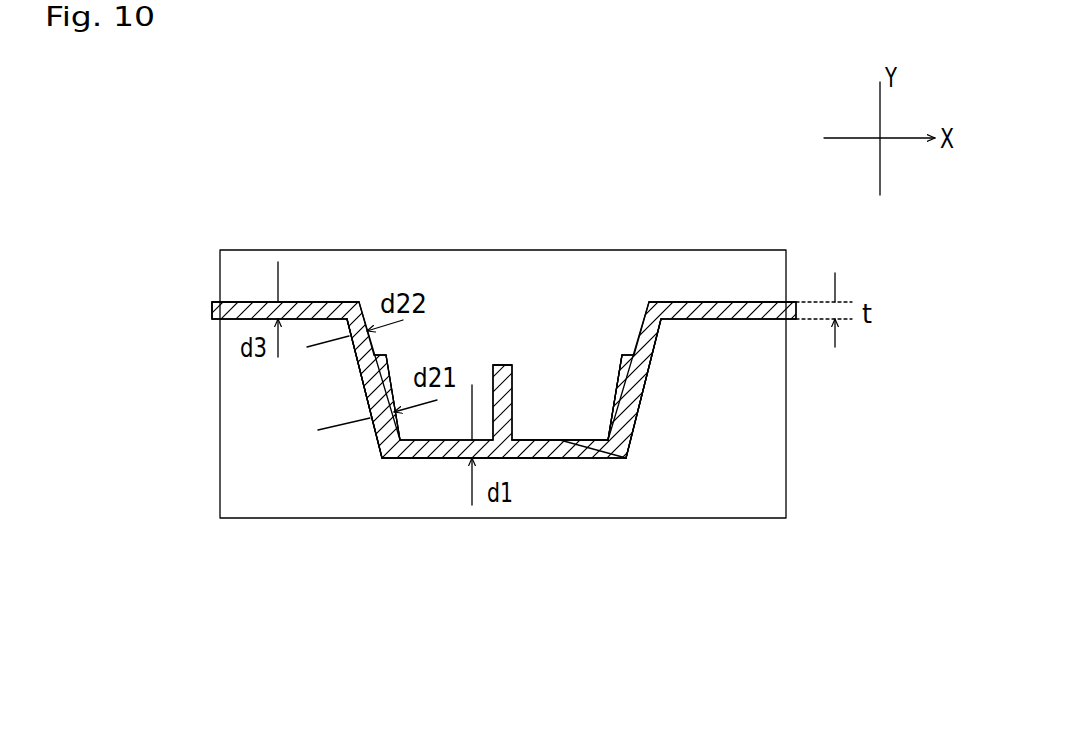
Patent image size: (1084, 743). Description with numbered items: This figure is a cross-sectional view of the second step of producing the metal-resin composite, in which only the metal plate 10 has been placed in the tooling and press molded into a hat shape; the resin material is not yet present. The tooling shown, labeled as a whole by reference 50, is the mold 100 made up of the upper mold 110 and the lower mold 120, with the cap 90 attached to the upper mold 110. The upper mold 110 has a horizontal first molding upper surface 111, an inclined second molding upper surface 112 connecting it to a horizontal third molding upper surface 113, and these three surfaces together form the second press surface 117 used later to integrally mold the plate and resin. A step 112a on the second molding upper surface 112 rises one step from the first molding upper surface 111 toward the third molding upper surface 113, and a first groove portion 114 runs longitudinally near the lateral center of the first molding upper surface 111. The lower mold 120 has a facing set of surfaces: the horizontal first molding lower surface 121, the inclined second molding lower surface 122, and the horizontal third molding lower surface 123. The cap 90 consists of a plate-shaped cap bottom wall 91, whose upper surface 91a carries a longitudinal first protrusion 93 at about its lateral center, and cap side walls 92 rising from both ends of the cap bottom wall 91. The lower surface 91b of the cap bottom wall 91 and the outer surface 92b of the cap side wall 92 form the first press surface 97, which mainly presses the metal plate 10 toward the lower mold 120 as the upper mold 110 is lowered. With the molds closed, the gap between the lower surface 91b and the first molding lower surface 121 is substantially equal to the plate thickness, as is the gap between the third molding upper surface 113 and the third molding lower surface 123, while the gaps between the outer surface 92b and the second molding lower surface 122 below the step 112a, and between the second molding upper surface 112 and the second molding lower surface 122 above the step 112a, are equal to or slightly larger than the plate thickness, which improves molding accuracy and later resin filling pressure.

The metal plate 10 is at (210, 310).
The terminal assembly 50 is at (166, 221).
The cap 90 is at (580, 440).
The cap bottom wall 91 is at (548, 440).
The upper surface of the cap bottom wall 91a is at (610, 420).
The lower surface of the cap bottom wall 91b is at (421, 459).
The cap side wall 92 is at (390, 370).
The outer surface of the cap side wall 92b is at (386, 436).
The first protrusion 93 is at (503, 396).
The first press surface 97 is at (528, 450).
The holding member 100 is at (497, 369).
The upper mold 110 is at (438, 203).
The first molding upper surface 111 is at (568, 440).
The second molding upper surface 112 is at (372, 420).
The step 112a is at (365, 396).
The third molding upper surface 113 is at (254, 300).
The first groove portion 114 is at (498, 378).
The second press surface 117 is at (441, 434).
The lower mold 120 is at (528, 518).
The first molding lower surface 121 is at (410, 459).
The second molding lower surface 122 is at (375, 454).
The third molding lower surface 123 is at (230, 302).